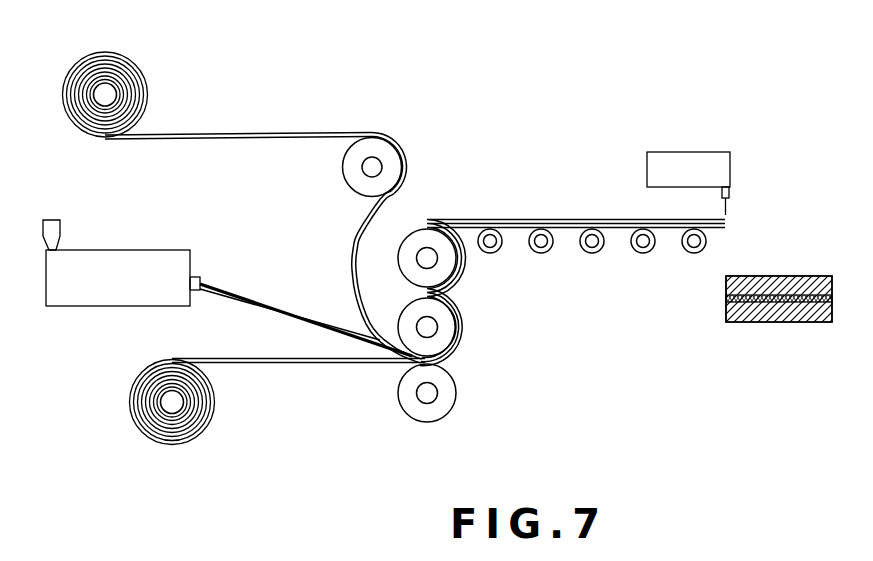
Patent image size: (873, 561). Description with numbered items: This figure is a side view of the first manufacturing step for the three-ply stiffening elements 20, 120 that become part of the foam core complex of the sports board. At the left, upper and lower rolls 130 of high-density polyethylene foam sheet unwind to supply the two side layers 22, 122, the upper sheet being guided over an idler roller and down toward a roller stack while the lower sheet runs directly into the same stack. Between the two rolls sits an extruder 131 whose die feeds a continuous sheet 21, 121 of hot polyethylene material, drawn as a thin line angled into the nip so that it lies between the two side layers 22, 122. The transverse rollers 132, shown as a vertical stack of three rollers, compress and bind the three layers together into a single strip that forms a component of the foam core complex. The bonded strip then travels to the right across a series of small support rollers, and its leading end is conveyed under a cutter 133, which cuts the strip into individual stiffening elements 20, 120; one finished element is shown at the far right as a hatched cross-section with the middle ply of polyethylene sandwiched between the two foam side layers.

The roll 130 is at (137, 70).
The side layer 22 is at (415, 245).
The side layer 122 is at (292, 400).
The extruder 131 is at (113, 250).
The continuous sheet 21 is at (306, 286).
The continuous sheet 121 is at (268, 308).
The transverse rollers 132 is at (443, 334).
The cutter 133 is at (680, 152).
The stiffening element 20 is at (740, 314).
The stiffening element 120 is at (722, 297).